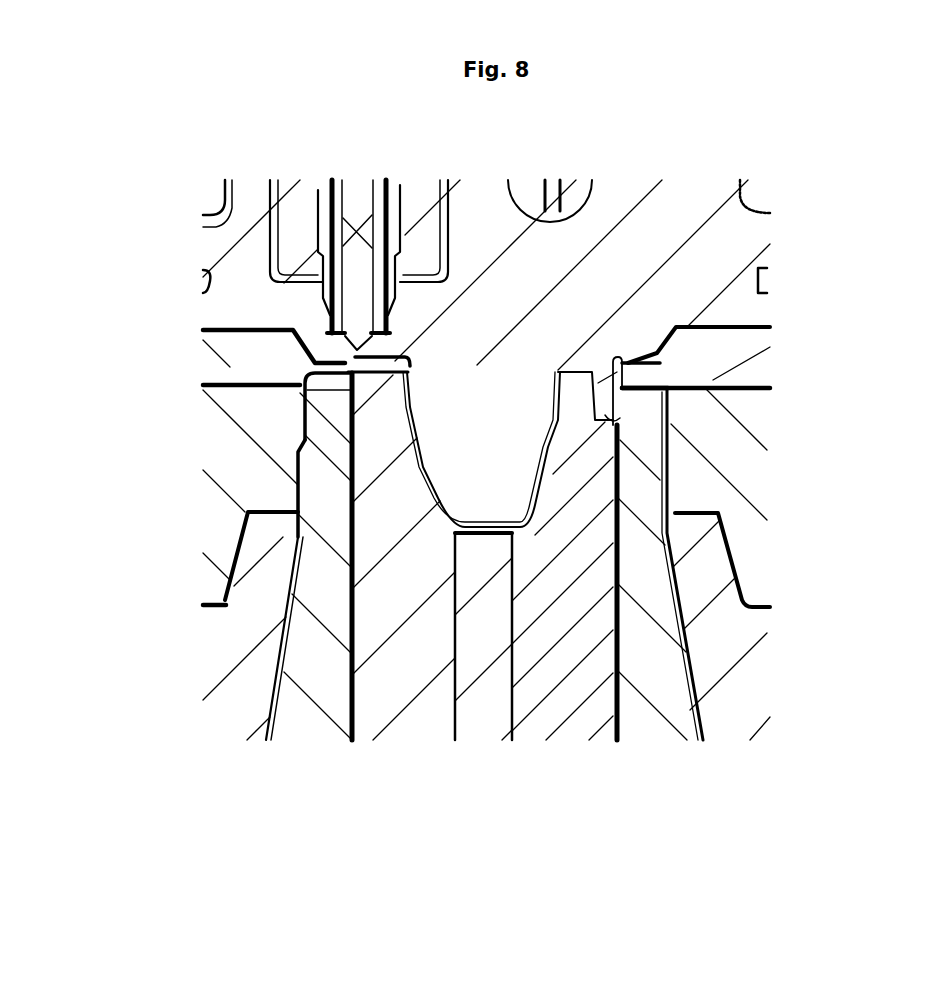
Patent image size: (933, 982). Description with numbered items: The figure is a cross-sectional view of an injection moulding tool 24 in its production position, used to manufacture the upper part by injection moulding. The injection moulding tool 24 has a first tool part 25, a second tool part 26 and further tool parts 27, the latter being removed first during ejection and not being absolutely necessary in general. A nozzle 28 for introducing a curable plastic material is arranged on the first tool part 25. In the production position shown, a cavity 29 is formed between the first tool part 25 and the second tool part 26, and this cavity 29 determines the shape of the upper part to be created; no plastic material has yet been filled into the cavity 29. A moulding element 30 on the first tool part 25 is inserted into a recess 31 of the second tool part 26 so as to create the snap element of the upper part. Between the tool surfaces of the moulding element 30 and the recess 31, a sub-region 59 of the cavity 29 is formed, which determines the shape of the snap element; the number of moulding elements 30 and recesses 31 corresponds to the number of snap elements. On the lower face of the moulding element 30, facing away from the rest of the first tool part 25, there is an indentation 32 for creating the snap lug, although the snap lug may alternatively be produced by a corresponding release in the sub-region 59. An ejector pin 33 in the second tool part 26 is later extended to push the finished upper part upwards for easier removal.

The injection moulding tool 24 is at (790, 223).
The first tool part 25 is at (687, 200).
The second tool part 26 is at (578, 657).
The further tool parts 27 is at (737, 623).
The nozzle 28 is at (357, 295).
The cavity 29 is at (403, 408).
The moulding element 30 is at (665, 350).
The recess 31 is at (622, 406).
The indentation 32 is at (625, 425).
The ejector pin 33 is at (493, 688).
The sub-region 59 is at (618, 419).